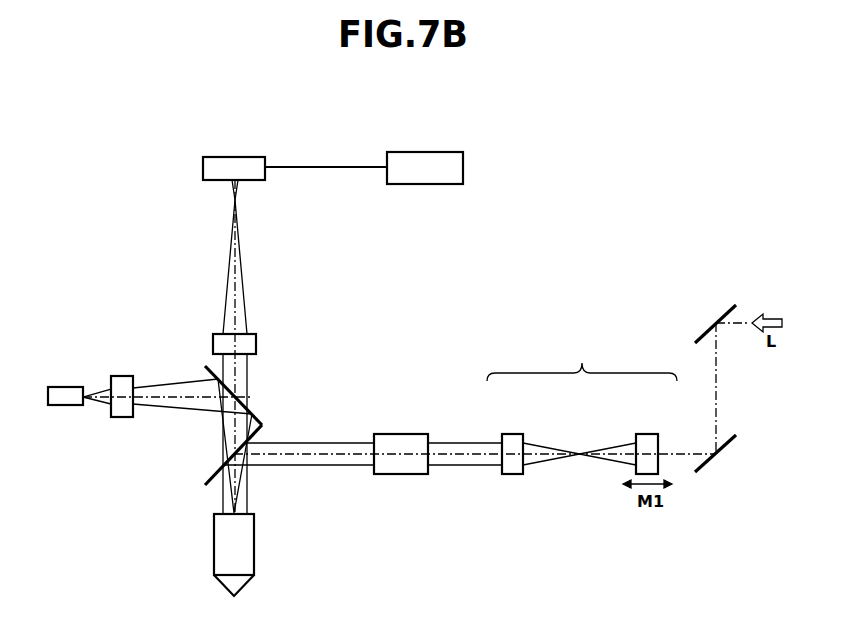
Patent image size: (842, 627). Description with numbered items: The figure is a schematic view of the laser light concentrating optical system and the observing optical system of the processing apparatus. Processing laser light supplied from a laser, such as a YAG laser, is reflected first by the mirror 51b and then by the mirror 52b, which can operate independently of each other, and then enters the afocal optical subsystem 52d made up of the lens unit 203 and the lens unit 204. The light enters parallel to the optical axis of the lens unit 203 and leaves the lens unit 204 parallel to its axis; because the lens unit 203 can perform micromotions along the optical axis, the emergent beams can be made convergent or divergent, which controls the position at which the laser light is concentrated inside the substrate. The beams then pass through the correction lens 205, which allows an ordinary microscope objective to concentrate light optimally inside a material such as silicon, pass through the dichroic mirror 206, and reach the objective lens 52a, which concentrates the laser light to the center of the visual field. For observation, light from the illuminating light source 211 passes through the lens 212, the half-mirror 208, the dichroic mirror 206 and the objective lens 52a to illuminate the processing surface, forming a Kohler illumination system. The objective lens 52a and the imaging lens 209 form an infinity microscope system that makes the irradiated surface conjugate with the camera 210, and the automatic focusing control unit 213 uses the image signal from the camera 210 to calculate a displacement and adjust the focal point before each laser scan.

The camera 210 is at (240, 157).
The automatic focusing control unit 213 is at (430, 152).
The imaging lens 209 is at (213, 338).
The half-mirror 208 is at (206, 368).
The dichroic mirror 206 is at (212, 478).
The lens 212 is at (122, 376).
The illuminating light source 211 is at (65, 387).
The objective lens 52a is at (214, 545).
The correction lens 205 is at (404, 434).
The lens unit 204 is at (513, 434).
The lens unit 203 is at (648, 434).
The afocal optical subsystem 52d is at (586, 371).
The mirror 51b is at (725, 312).
The mirror 52b is at (702, 477).